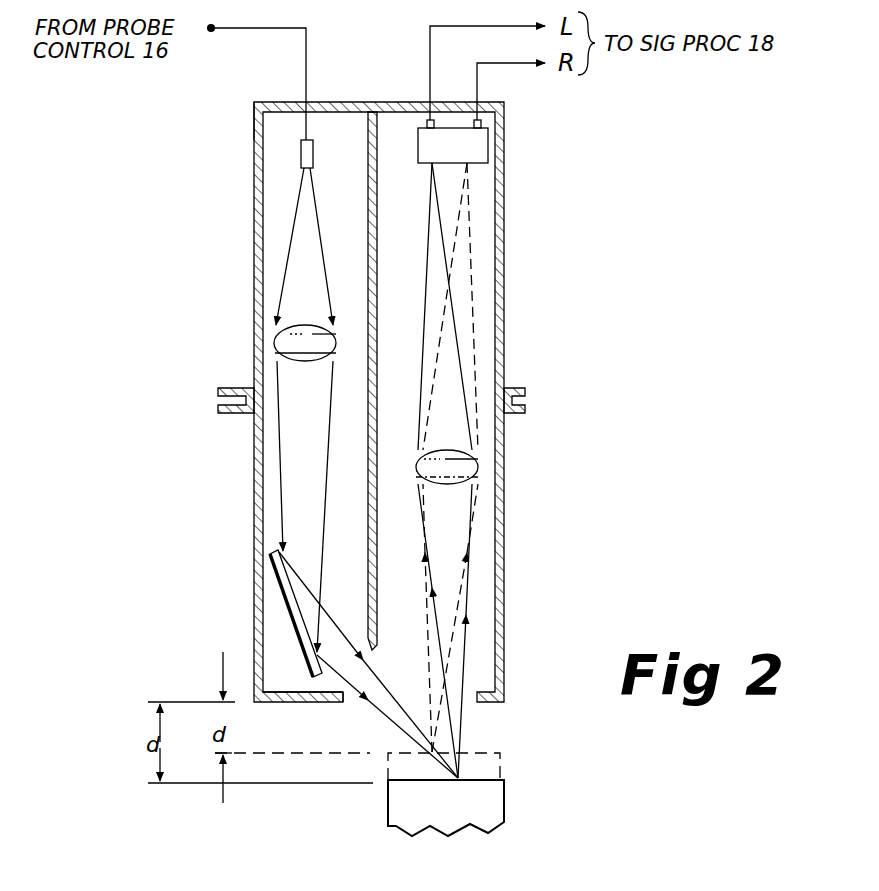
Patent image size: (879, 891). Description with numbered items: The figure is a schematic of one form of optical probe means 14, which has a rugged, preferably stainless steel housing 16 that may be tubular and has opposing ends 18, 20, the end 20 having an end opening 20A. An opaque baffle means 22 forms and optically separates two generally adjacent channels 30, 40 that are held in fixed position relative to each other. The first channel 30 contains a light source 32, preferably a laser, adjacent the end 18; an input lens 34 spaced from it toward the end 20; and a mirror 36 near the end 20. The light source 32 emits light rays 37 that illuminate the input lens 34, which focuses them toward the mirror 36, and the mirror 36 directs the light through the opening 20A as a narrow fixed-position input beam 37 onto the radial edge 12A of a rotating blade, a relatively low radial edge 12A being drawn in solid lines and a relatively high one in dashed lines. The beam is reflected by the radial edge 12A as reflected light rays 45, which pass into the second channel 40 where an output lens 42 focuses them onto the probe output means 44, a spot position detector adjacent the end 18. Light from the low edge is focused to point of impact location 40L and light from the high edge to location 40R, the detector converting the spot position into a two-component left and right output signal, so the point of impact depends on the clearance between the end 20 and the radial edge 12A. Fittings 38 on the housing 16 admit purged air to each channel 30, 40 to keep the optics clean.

The radial edge 12A is at (492, 780).
The optical probe means 14 is at (657, 325).
The housing 16 is at (504, 243).
The end 18 is at (254, 122).
The end 20 is at (280, 702).
The end opening 20A is at (359, 690).
The baffle means 22 is at (378, 350).
The first channel 30 is at (352, 210).
The light source 32 is at (301, 150).
The input lens 34 is at (285, 343).
The mirror 36 is at (283, 598).
The light rays 37 is at (286, 268).
The fittings 38 is at (233, 400).
The second channel 40 is at (410, 245).
The point of impact location 40L is at (431, 166).
The point of impact location 40R is at (468, 165).
The output lens 42 is at (479, 467).
The probe output means 44 is at (468, 163).
The reflected light rays 45 is at (466, 606).